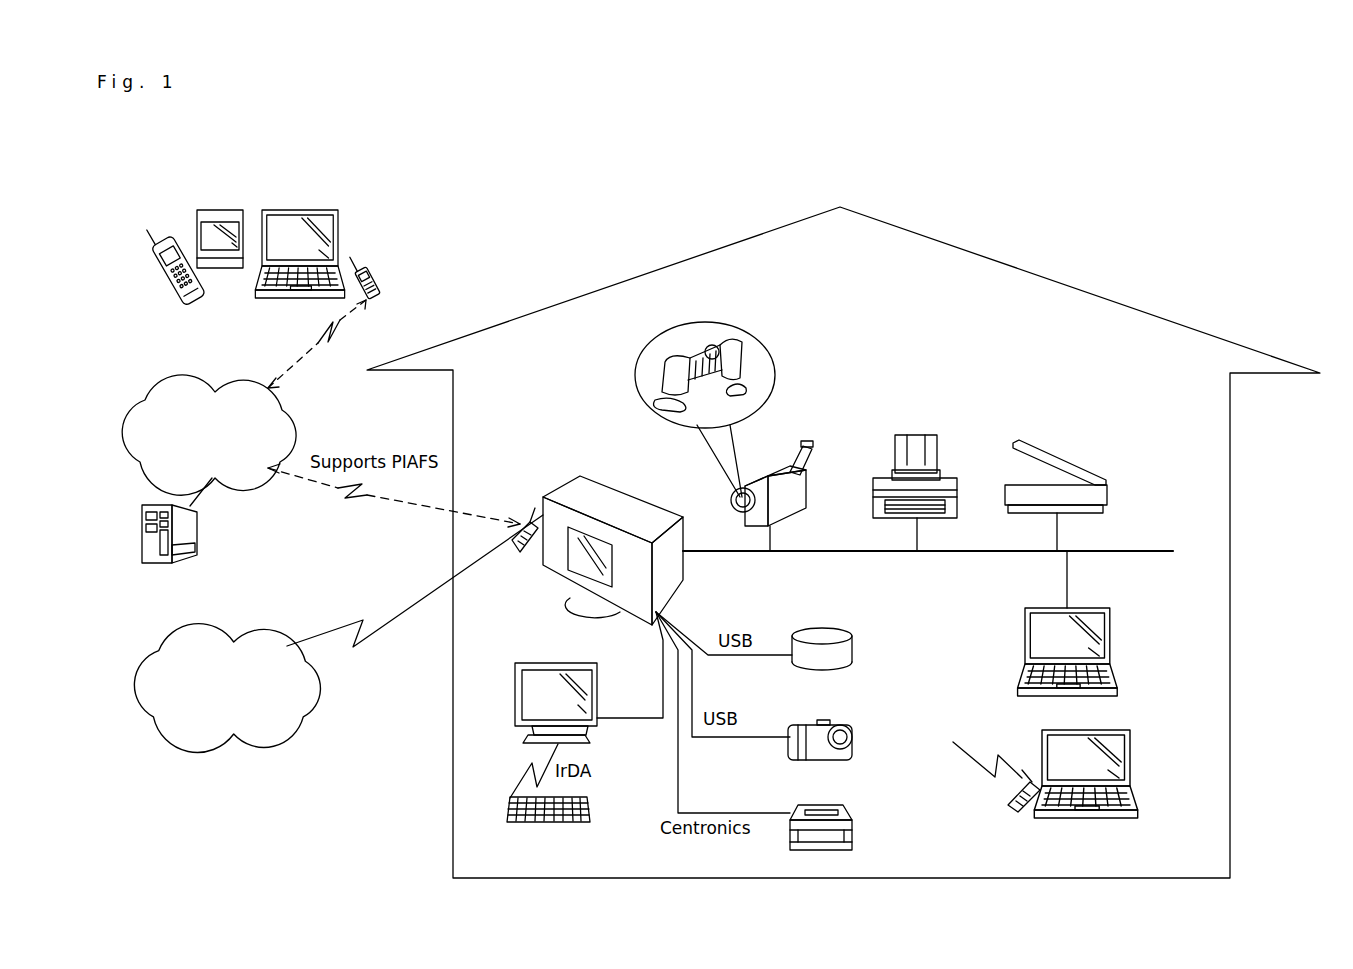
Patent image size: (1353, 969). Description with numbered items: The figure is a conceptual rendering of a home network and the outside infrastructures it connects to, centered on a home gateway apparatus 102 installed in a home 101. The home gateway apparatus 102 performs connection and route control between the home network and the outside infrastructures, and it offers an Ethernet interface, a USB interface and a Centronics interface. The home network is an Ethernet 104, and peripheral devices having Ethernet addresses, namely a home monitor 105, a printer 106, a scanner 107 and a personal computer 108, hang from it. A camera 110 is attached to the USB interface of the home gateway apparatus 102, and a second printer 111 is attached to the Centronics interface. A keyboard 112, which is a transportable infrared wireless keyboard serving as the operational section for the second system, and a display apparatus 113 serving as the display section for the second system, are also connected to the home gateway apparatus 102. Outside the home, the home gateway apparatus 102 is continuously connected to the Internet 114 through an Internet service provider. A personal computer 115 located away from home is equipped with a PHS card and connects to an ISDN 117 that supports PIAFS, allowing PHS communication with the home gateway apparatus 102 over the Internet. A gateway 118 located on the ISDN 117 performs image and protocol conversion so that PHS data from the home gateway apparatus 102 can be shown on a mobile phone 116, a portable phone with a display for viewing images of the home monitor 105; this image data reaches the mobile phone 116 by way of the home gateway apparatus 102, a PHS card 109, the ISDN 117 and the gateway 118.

The home 101 is at (843, 542).
The home gateway apparatus 102 is at (603, 497).
The Ethernet 104 is at (812, 553).
The home monitor 105 is at (797, 445).
The printer 106 is at (900, 438).
The scanner 107 is at (1040, 455).
The personal computer 108 is at (1090, 608).
The PHS card 109 is at (522, 520).
The camera 110 is at (848, 725).
The printer 111 is at (848, 812).
The keyboard 112 is at (550, 825).
The display apparatus 113 is at (515, 665).
The Internet 114 is at (165, 740).
The personal computer 115 is at (390, 282).
The mobile phone 116 is at (166, 292).
The ISDN 117 is at (302, 430).
The gateway 118 is at (185, 545).